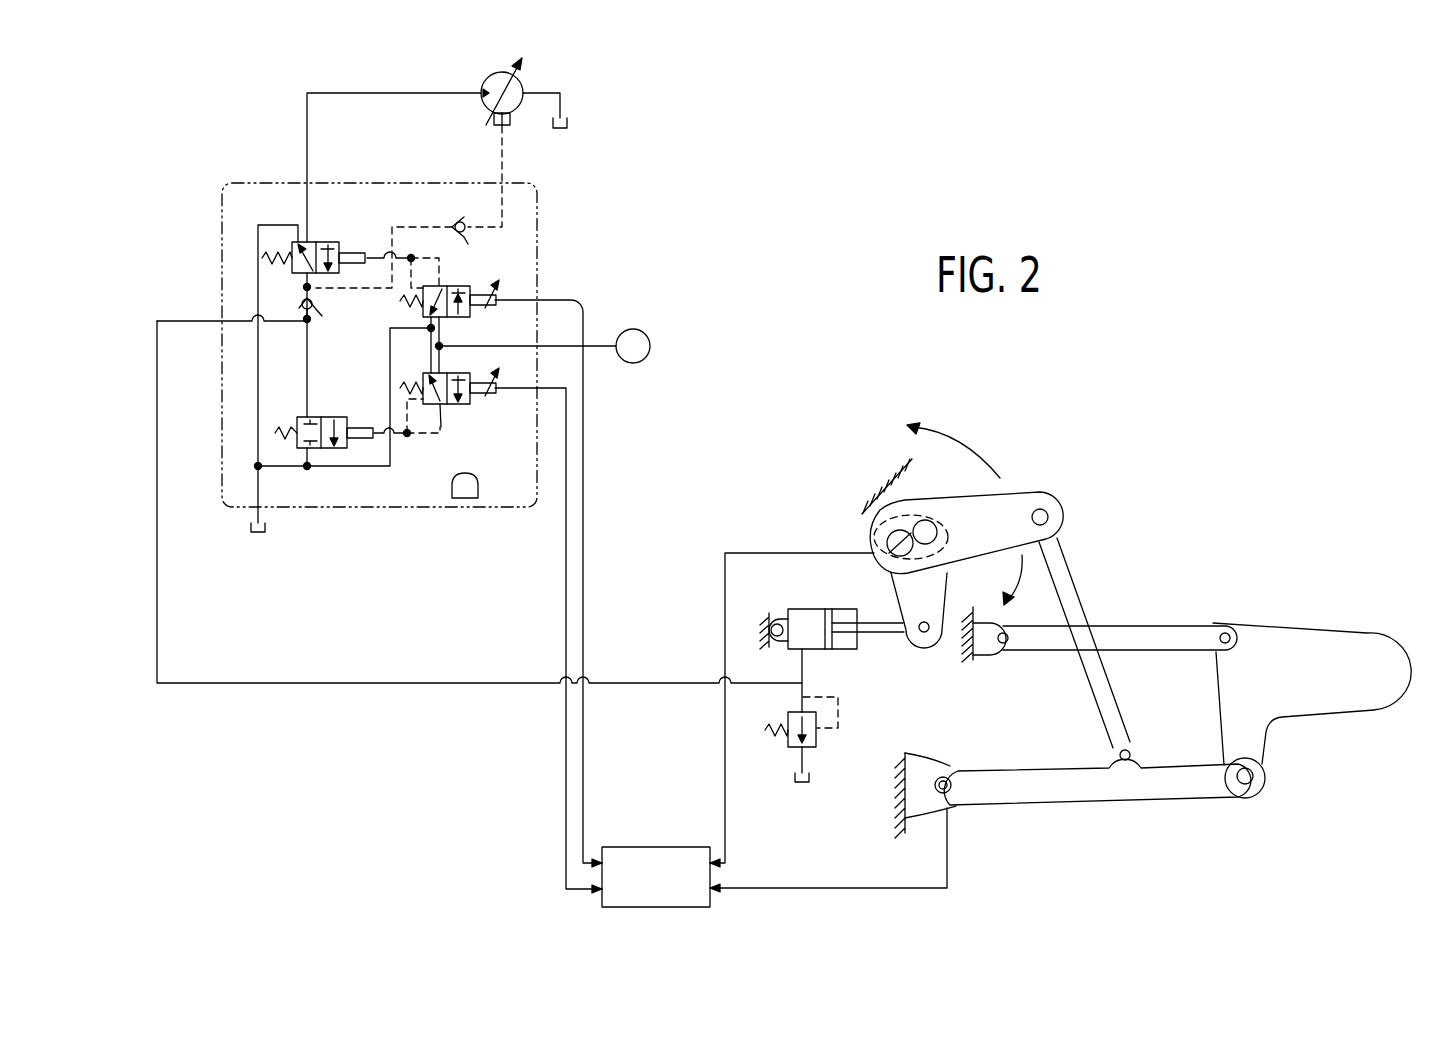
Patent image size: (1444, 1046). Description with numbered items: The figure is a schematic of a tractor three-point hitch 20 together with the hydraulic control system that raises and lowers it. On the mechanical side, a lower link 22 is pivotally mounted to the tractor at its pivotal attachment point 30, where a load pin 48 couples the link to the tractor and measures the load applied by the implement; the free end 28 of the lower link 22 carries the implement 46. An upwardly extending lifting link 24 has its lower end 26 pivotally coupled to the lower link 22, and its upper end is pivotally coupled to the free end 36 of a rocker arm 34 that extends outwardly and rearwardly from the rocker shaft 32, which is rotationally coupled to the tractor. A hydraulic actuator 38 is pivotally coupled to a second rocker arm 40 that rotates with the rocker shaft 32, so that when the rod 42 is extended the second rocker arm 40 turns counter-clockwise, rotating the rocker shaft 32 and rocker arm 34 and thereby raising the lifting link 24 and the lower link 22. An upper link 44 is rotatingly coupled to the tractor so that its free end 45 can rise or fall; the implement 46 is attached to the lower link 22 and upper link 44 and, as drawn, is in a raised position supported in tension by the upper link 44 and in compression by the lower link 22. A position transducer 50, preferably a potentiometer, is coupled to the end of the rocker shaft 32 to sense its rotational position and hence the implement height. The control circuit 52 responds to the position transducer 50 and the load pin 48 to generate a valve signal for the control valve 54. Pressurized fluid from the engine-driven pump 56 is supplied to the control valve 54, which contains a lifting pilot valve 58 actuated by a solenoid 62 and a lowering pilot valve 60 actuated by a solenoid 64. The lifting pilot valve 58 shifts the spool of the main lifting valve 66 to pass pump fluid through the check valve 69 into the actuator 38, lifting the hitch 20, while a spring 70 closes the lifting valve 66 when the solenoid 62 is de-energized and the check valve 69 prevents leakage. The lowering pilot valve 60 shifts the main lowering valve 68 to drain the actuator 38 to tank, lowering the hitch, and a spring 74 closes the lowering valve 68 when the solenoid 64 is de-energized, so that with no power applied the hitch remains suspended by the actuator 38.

The hitch 20 is at (1102, 478).
The lower links 22 is at (1112, 790).
The lifting links 24 is at (1076, 584).
The lower ends 26 is at (1130, 742).
The free ends 28 is at (1240, 796).
The pivotal attachment points 30 is at (950, 771).
The rocker shaft 32 is at (927, 522).
The rocker arms 34 is at (968, 548).
The free ends 36 is at (1065, 511).
The hydraulic actuator 38 is at (800, 609).
The second rocker arm 40 is at (909, 606).
The rod 42 is at (872, 632).
The upper link 44 is at (1150, 626).
The free end 45 is at (1220, 626).
The implement 46 is at (1279, 685).
The load pins 48 is at (938, 775).
The position transducer 50 is at (880, 540).
The control circuit 52 is at (650, 847).
The control valve 54 is at (540, 255).
The pump 56 is at (519, 110).
The lifting pilot valve 58 is at (447, 288).
The lowering pilot valve 60 is at (457, 374).
The lifting solenoid 62 is at (497, 295).
The lowering solenoid 64 is at (497, 386).
The main lifting valve 66 is at (318, 243).
The main lowering valve 68 is at (318, 418).
The check valve 69 is at (318, 322).
The spring 70 is at (262, 251).
The spring 74 is at (275, 433).